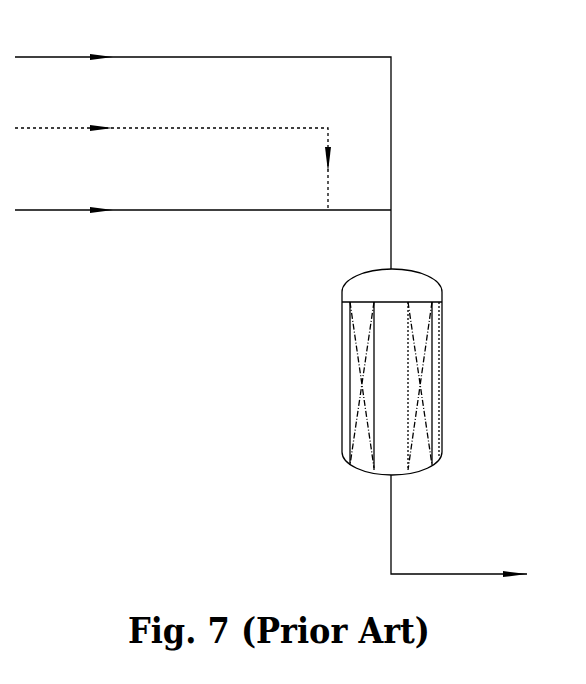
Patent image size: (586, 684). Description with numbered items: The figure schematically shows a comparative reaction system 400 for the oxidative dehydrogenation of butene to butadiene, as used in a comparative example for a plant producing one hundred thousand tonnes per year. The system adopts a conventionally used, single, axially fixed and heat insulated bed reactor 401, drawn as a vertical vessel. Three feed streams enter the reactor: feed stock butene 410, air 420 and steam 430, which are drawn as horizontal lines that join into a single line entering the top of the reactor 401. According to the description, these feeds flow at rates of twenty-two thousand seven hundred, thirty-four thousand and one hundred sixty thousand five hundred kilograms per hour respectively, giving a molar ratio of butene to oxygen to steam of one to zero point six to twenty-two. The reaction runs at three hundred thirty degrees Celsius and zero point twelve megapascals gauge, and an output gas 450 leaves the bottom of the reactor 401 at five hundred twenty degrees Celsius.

The prior art reactor system 400 is at (166, 474).
The axially fixed and heat insulated bed reactor 401 is at (438, 430).
The feed stock butene 410 is at (203, 149).
The air 420 is at (173, 155).
The steam 430 is at (203, 197).
The output gas 450 is at (459, 526).